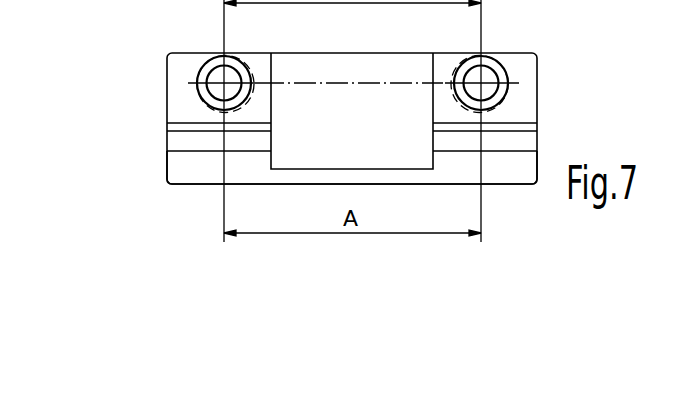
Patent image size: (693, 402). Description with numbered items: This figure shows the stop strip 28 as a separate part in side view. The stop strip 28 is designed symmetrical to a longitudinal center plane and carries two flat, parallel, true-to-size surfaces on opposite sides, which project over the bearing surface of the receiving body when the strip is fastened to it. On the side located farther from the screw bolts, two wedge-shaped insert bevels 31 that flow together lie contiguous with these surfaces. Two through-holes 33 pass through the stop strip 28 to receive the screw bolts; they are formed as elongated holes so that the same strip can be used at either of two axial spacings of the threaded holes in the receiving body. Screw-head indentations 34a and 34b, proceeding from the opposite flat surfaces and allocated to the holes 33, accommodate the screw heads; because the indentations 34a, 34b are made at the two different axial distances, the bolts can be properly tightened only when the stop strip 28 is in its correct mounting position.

The stop strip 28 is at (521, 98).
The wedge-shaped insert bevels 31 is at (175, 173).
The through-holes 33 is at (205, 58).
The screw-head indentation 34a is at (264, 58).
The screw-head indentation 34b is at (201, 74).